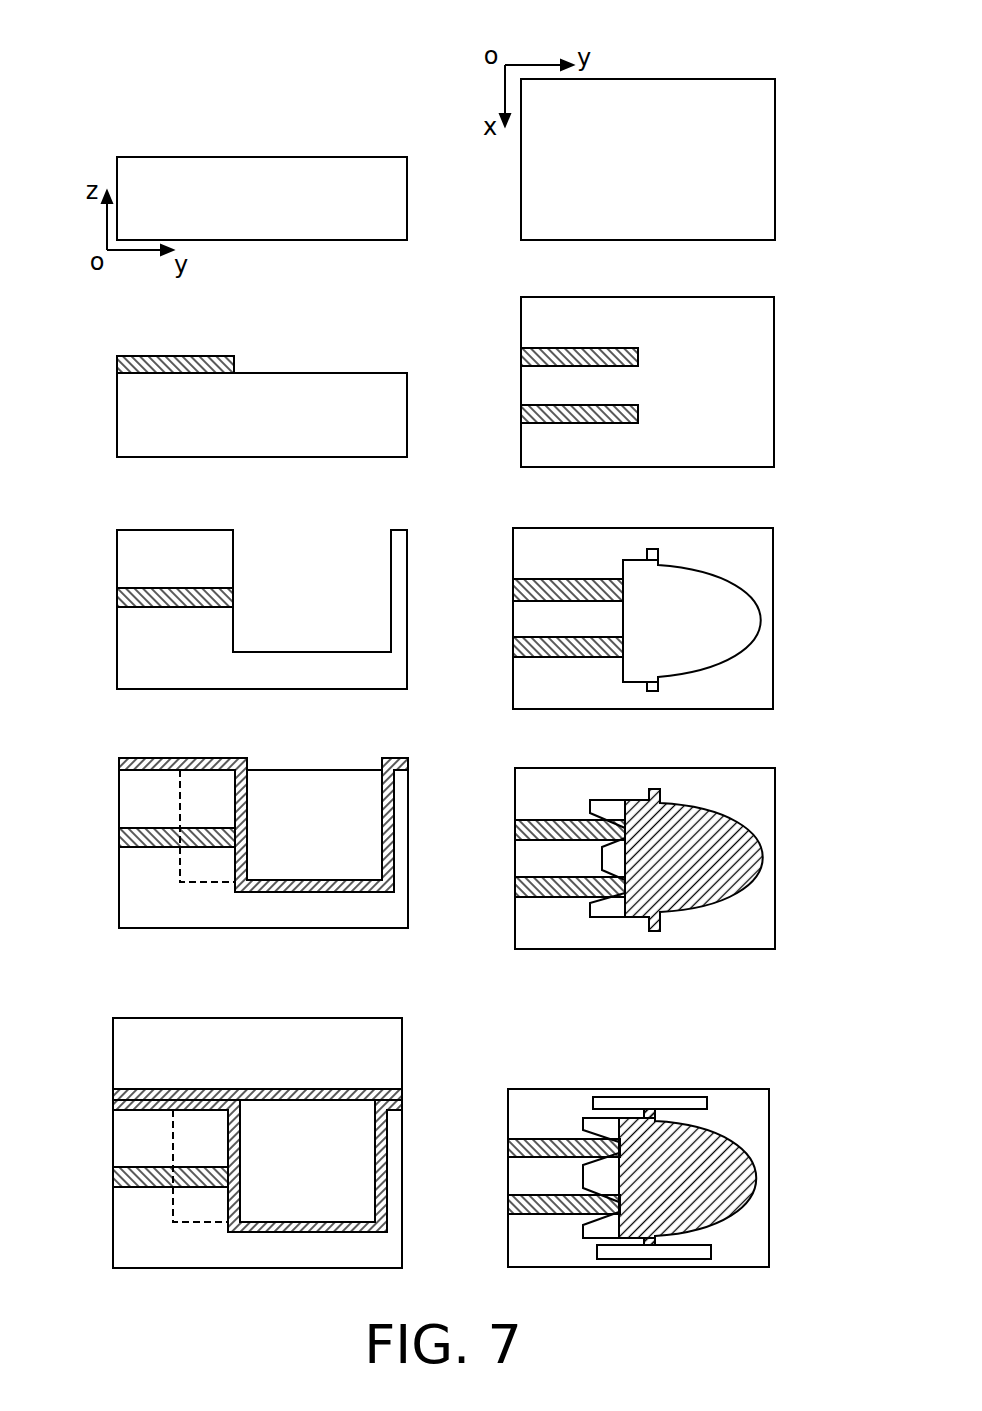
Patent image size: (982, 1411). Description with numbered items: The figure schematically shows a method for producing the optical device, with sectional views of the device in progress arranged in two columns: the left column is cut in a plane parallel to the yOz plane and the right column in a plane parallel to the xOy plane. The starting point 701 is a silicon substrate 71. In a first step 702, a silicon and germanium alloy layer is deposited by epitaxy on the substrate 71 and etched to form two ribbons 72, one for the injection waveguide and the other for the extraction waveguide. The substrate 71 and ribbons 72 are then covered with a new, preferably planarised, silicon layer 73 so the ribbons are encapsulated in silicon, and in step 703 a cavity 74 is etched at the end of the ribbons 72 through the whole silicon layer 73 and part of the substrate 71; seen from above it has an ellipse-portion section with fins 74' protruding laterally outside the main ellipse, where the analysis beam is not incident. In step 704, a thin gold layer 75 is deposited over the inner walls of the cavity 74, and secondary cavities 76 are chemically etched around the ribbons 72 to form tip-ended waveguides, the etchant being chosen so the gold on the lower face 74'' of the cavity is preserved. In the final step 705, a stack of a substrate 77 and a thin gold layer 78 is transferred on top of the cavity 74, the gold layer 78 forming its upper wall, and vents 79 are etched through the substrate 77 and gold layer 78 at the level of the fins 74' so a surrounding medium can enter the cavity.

The substrate 71 is at (177, 190).
The ribbons 72 is at (203, 365).
The silicon layer 73 is at (131, 551).
The cavity 74 is at (574, 584).
The fins 74' is at (746, 878).
The lower face of the cavity 74'' is at (314, 826).
The thin gold layer 75 is at (120, 768).
The secondary cavities 76 is at (590, 807).
The substrate 77 is at (142, 1062).
The thin gold layer 78 is at (113, 1095).
The vents 79 is at (687, 1103).
The starting point 701 is at (843, 165).
The first step 702 is at (845, 397).
The step 703 is at (845, 637).
The step 704 is at (845, 878).
The final step 705 is at (845, 1188).